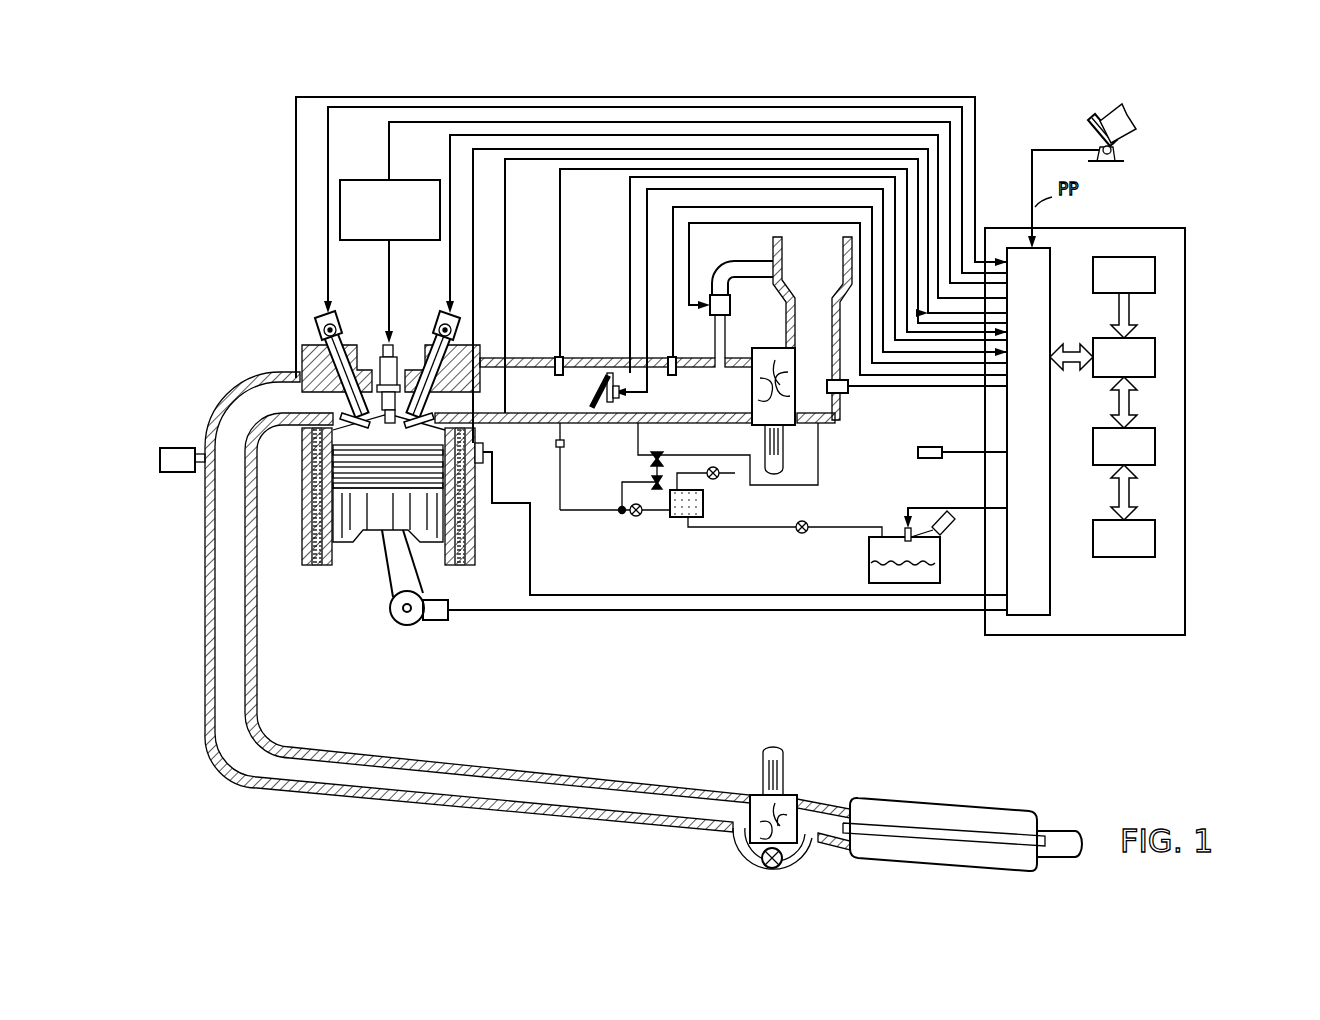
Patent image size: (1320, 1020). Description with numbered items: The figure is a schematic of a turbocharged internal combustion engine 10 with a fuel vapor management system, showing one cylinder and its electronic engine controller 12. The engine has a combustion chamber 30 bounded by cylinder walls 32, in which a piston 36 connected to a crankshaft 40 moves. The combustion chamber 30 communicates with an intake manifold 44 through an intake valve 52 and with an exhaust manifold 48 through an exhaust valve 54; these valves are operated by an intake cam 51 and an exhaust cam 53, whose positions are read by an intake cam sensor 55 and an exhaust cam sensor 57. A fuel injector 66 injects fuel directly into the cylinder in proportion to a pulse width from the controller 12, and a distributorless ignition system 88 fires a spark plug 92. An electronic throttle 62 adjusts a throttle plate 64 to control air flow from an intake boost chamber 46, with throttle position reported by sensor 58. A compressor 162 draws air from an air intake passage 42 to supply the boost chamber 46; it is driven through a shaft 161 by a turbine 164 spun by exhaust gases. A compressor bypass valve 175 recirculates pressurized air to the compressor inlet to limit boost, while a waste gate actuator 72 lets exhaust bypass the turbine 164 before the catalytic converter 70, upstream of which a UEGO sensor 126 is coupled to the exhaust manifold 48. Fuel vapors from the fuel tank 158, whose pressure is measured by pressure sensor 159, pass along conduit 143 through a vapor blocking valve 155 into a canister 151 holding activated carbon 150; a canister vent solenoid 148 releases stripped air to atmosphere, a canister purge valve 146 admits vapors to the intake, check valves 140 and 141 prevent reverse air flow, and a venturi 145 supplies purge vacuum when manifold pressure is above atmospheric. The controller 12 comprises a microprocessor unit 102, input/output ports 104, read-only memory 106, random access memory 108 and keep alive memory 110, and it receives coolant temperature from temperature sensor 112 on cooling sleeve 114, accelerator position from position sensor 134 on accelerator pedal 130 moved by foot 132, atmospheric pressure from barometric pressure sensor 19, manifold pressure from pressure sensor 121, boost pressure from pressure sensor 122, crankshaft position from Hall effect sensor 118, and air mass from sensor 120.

The internal combustion engine 10 is at (240, 301).
The electronic engine controller 12 is at (1185, 228).
The barometric pressure sensor 19 is at (924, 458).
The combustion chamber 30 is at (386, 433).
The cylinder walls 32 is at (342, 557).
The piston 36 is at (373, 520).
The crankshaft 40 is at (400, 624).
The air intake passage 42 is at (823, 277).
The intake manifold 44 is at (535, 403).
The intake boost chamber 46 is at (702, 403).
The exhaust manifold 48 is at (283, 403).
The intake cam 51 is at (440, 313).
The intake valve 52 is at (432, 418).
The exhaust cam 53 is at (333, 315).
The exhaust valve 54 is at (330, 400).
The intake cam sensor 55 is at (455, 332).
The exhaust cam sensor 57 is at (318, 330).
The throttle position sensor 58 is at (617, 376).
The electronic throttle 62 is at (601, 374).
The throttle plate 64 is at (598, 380).
The fuel injector 66 is at (483, 460).
The catalytic converter 70 is at (852, 860).
The waste gate actuator 72 is at (760, 862).
The distributorless ignition system 88 is at (339, 180).
The spark plug 92 is at (395, 345).
The microprocessor unit 102 is at (1155, 352).
The input/output ports 104 is at (1053, 257).
The read-only memory 106 is at (1155, 270).
The random access memory 108 is at (1155, 445).
The keep alive memory 110 is at (1155, 535).
The temperature sensor 112 is at (480, 498).
The cooling sleeve 114 is at (470, 545).
The Hall effect sensor 118 is at (432, 622).
The air mass sensor 120 is at (845, 393).
The pressure sensor 121 is at (556, 357).
The pressure sensor 122 is at (675, 357).
The Universal Exhaust Gas Oxygen sensor 126 is at (160, 455).
The accelerator pedal 130 is at (1090, 123).
The foot 132 is at (1130, 116).
The position sensor 134 is at (1115, 152).
The check valve 140 is at (560, 444).
The check valve 141 is at (652, 482).
The conduit 143 is at (733, 530).
The venturi 145 is at (657, 452).
The canister purge valve 146 is at (636, 516).
The canister vent solenoid 148 is at (711, 480).
The activated carbon 150 is at (684, 518).
The canister 151 is at (703, 509).
The vapor blocking valve 155 is at (800, 533).
The fuel tank 158 is at (869, 572).
The pressure sensor 159 is at (912, 538).
The shaft 161 is at (765, 445).
The compressor 162 is at (770, 348).
The turbine 164 is at (755, 795).
The compressor bypass valve 175 is at (730, 305).